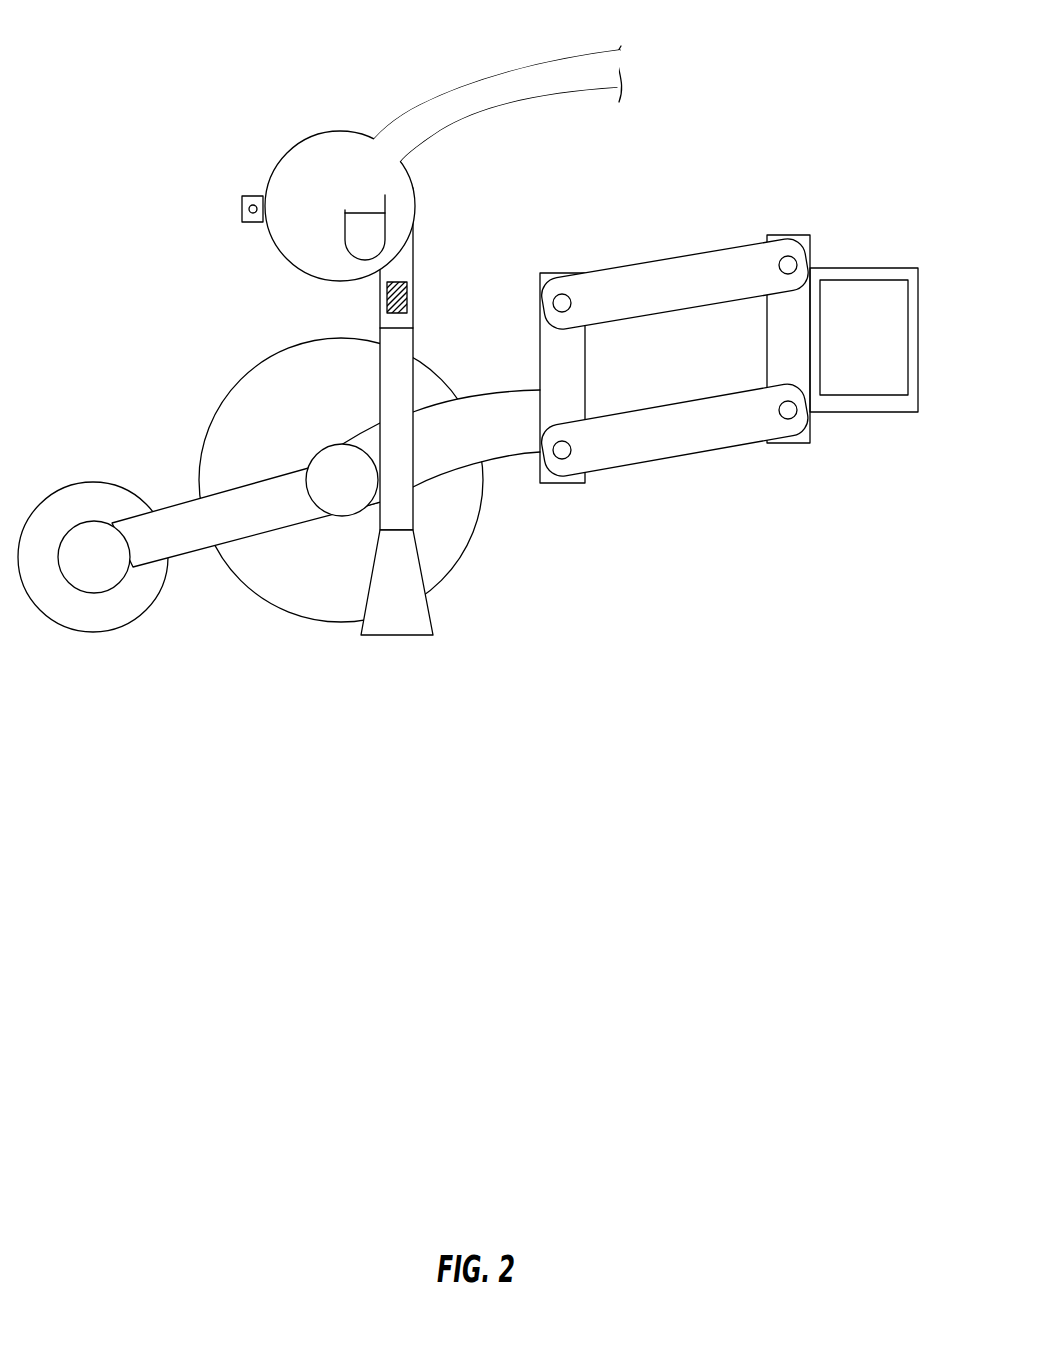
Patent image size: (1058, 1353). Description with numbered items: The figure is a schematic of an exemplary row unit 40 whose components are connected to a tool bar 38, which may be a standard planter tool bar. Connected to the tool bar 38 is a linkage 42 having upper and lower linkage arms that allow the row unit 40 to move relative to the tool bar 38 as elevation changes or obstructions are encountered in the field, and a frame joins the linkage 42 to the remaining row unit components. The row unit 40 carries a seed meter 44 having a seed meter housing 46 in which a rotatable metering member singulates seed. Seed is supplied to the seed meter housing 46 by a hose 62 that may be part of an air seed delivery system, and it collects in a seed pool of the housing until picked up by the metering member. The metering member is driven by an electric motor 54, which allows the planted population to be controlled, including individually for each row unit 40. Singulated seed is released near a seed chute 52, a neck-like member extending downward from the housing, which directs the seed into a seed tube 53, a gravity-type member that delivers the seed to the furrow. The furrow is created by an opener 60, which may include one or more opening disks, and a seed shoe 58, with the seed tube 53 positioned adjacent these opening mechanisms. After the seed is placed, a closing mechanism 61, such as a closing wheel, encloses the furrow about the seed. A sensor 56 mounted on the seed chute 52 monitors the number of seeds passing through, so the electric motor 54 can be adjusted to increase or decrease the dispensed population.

The tool bar 38 is at (880, 268).
The row unit 40 is at (302, 56).
The linkage 42 is at (672, 257).
The seed meter 44 is at (272, 170).
The seed meter housing 46 is at (313, 157).
The seed chute 52 is at (431, 359).
The seed tube 53 is at (388, 393).
The electric motor 54 is at (242, 208).
The sensor 56 is at (408, 297).
The seed shoe 58 is at (427, 605).
The opener 60 is at (464, 554).
The closing mechanism 61 is at (82, 483).
The hose 62 is at (524, 67).